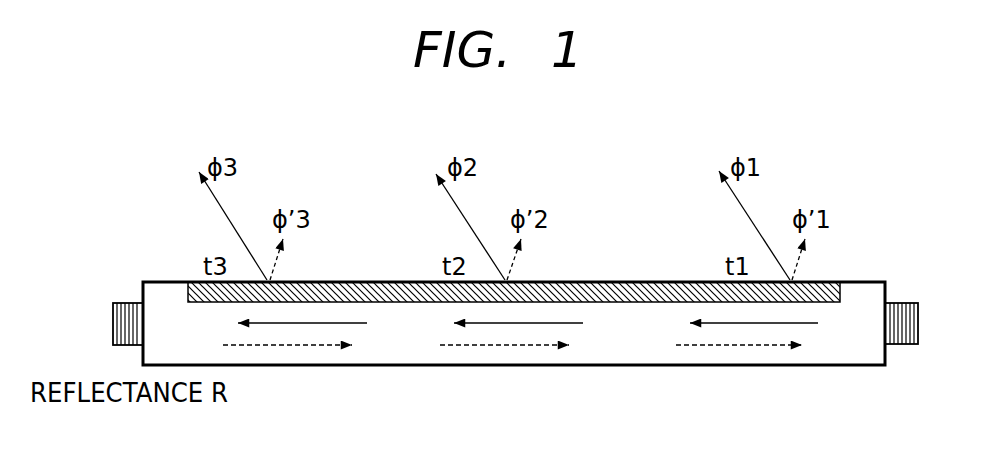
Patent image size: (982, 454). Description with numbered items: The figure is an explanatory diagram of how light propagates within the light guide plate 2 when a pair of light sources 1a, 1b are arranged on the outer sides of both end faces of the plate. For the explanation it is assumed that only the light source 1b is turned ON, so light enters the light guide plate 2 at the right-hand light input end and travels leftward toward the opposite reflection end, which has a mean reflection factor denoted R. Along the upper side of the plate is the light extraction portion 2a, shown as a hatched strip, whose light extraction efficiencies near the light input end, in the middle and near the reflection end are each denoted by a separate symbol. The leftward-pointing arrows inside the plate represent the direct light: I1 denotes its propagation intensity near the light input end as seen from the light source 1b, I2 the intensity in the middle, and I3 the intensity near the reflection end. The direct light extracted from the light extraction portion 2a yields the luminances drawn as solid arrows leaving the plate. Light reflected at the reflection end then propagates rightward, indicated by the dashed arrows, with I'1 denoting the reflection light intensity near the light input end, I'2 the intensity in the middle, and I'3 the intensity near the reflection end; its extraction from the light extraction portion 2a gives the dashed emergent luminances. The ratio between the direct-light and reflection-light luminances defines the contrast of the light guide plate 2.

The light source 1a is at (119, 322).
The light source 1b is at (905, 322).
The light guide plate 2 is at (652, 355).
The light extraction portion 2a is at (617, 288).
The propagation intensity of light near the light input end I1 is at (769, 319).
The propagation intensity of light in the middle I2 is at (534, 319).
The propagation intensity of light near the reflection end I3 is at (317, 319).
The light intensity of reflection light near the light input end I'1 is at (739, 385).
The light intensity of reflection light in the middle I'2 is at (504, 385).
The light intensity of reflection light near the reflection end I'3 is at (287, 385).